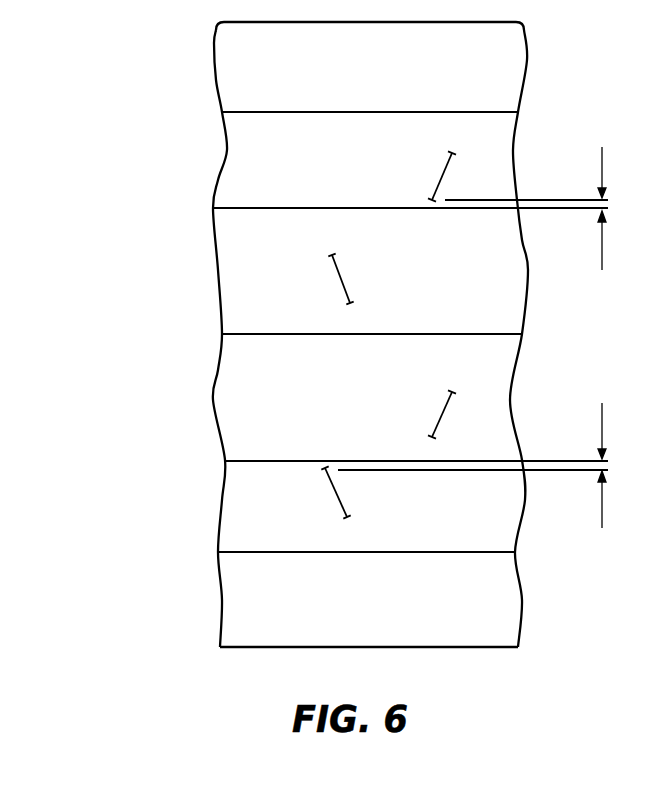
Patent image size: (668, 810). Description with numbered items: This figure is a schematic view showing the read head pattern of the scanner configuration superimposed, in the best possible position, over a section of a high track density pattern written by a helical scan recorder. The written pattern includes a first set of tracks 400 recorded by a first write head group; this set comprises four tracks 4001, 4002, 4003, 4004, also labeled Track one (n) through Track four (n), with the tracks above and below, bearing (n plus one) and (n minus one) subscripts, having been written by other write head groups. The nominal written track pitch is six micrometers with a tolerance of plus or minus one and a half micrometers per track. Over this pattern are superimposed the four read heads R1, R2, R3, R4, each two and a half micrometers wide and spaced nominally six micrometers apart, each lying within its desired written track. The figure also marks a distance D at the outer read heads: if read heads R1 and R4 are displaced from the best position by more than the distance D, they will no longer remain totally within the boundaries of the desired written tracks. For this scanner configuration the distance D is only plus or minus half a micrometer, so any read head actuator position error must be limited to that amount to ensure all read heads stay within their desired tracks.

The first set of tracks 400 is at (135, 130).
The track 4001 is at (233, 522).
The track 4002 is at (237, 420).
The track 4003 is at (237, 292).
The track 4004 is at (237, 185).
The read head R1 is at (464, 496).
The read head R2 is at (439, 401).
The read head R3 is at (350, 267).
The read head R4 is at (505, 172).
The distance D is at (614, 337).